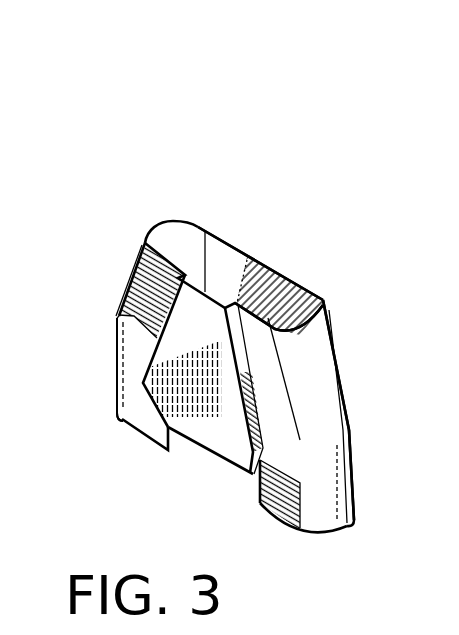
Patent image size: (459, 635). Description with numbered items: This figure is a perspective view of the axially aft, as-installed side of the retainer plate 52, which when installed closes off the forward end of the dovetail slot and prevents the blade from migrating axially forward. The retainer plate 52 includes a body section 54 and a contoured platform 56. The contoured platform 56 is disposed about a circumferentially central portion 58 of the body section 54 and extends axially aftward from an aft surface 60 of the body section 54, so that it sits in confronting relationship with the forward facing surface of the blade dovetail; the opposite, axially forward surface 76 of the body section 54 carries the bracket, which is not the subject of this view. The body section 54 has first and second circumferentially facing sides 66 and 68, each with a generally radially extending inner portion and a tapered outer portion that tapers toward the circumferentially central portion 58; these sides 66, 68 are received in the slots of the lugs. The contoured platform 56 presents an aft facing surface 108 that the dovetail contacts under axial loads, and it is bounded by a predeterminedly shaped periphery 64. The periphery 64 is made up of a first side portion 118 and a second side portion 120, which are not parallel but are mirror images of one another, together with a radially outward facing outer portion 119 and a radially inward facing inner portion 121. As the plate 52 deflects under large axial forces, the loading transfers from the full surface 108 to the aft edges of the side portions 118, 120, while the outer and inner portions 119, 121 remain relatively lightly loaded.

The retainer plate 52 is at (228, 122).
The body section 54 is at (146, 207).
The contoured platform 56 is at (200, 432).
The circumferentially central portion 58 is at (228, 282).
The aft surface 60 is at (133, 314).
The periphery 64 is at (258, 318).
The first circumferentially facing side 66 is at (350, 430).
The second circumferentially facing side 68 is at (142, 250).
The axially forward surface 76 is at (205, 230).
The aft facing surface 108 is at (222, 437).
The first side portion 118 is at (243, 367).
The radially outward facing outer portion 119 is at (233, 285).
The second side portion 120 is at (123, 360).
The radially inward facing inner portion 121 is at (235, 465).